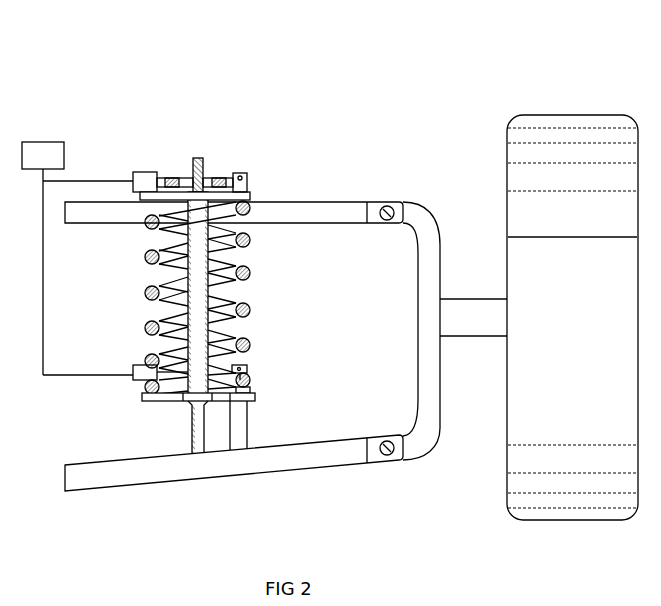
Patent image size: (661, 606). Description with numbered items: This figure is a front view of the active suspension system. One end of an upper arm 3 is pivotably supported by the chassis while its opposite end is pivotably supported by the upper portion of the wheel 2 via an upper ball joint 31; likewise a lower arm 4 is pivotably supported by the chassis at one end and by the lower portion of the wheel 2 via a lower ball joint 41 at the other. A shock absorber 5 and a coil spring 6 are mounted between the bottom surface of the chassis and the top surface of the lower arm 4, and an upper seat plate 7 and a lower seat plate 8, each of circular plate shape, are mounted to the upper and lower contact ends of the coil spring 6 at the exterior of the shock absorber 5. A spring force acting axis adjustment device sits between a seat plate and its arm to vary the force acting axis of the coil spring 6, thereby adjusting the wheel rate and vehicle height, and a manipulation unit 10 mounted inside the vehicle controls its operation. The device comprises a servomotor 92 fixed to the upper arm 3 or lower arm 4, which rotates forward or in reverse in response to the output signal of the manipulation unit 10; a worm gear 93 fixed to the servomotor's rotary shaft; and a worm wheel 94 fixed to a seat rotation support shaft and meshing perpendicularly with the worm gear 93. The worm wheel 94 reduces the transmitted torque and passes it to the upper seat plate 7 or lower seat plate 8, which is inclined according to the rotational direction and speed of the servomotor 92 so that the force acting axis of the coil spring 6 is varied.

The wheel 2 is at (575, 115).
The upper arm 3 is at (310, 210).
The upper ball joint 31 is at (384, 207).
The lower arm 4 is at (288, 458).
The lower ball joint 41 is at (385, 455).
The shock absorber 5 is at (245, 303).
The coil spring 6 is at (248, 276).
The upper seat plate 7 is at (173, 192).
The lower seat plate 8 is at (166, 401).
The manipulation unit 10 is at (43, 142).
The servomotor 92 is at (146, 172).
The worm gear 93 is at (237, 173).
The worm wheel 94 is at (213, 178).